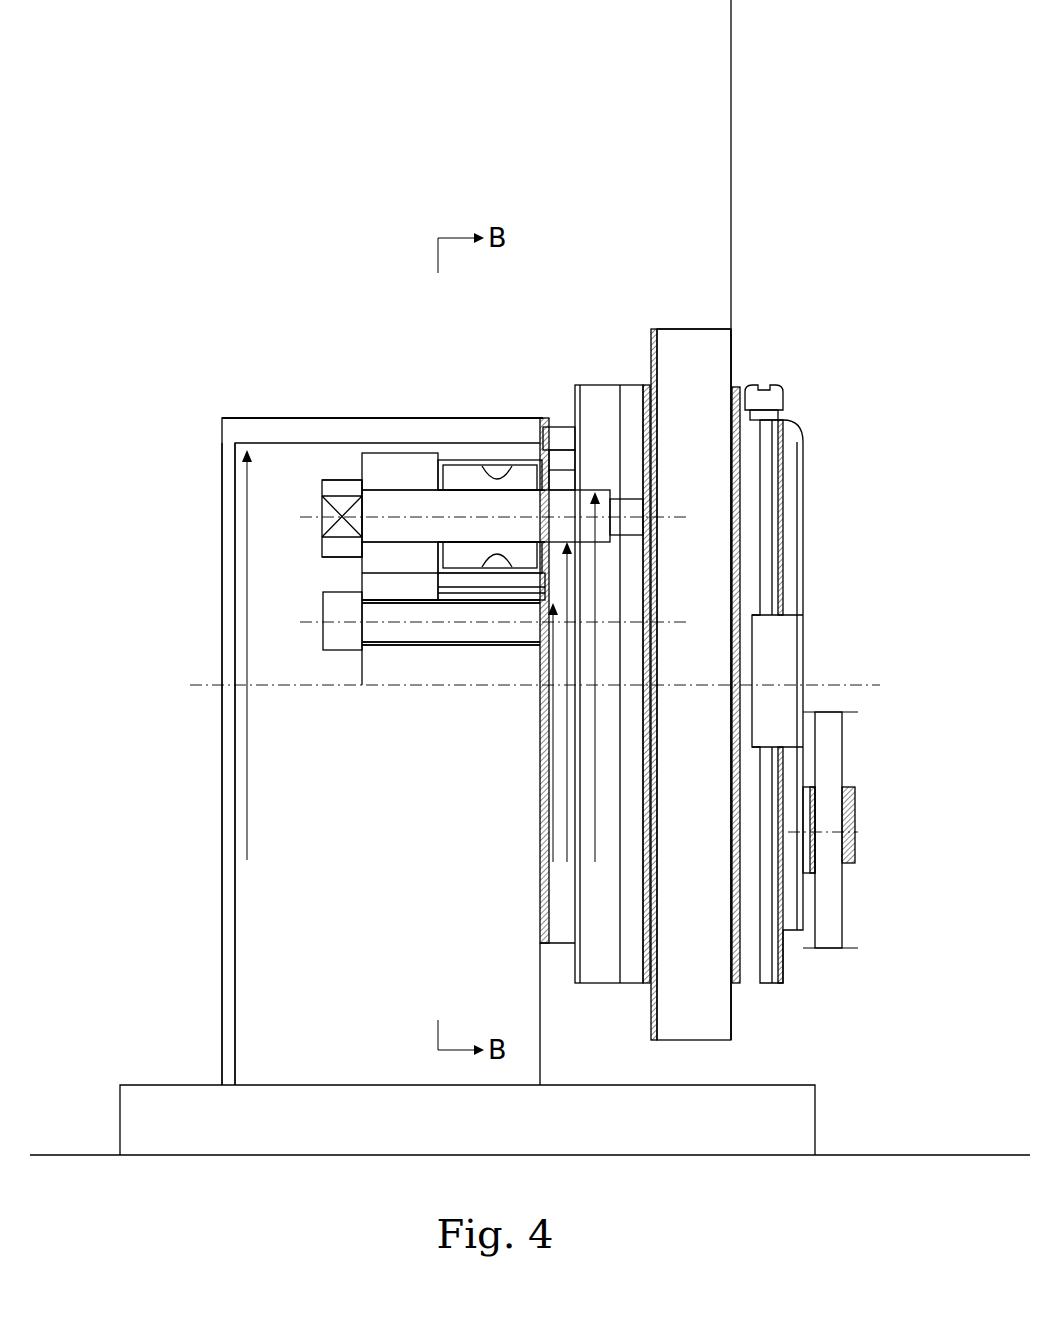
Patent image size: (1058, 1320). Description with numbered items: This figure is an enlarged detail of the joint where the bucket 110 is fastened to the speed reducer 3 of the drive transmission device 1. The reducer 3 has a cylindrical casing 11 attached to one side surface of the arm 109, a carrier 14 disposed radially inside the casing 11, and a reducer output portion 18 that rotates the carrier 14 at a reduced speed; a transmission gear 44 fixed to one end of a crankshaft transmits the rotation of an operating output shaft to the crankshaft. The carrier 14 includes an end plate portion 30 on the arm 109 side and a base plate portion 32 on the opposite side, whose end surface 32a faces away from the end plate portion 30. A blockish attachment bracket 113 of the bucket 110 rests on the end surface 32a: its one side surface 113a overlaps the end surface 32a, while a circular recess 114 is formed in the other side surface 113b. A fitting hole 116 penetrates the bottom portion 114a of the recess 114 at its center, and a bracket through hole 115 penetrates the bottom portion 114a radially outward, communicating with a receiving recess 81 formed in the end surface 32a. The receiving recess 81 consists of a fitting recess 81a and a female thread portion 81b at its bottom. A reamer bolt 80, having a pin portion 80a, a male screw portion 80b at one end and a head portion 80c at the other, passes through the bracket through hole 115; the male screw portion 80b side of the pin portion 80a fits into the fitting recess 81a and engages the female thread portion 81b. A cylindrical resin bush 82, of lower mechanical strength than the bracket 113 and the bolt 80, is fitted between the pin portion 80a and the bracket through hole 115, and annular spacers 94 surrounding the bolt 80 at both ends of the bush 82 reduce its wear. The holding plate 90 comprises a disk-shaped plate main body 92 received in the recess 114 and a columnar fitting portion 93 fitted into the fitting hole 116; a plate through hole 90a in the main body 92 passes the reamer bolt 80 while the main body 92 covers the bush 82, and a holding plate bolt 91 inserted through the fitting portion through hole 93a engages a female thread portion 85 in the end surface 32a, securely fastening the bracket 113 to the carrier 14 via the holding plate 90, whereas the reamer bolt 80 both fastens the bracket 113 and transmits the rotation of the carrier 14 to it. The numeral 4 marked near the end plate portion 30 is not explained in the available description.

The drive transmission device 1 is at (680, 245).
The speed reducer 3 is at (740, 323).
The rotary unit 4 is at (821, 684).
The cylindrical casing 11 is at (701, 318).
The carrier 14 is at (530, 864).
The reducer output portion 18 is at (860, 862).
The end plate portion 30 is at (805, 510).
The base plate portion 32 is at (598, 385).
The end surface of the base plate portion 32a is at (548, 428).
The transmission gear 44 is at (835, 755).
The reamer bolt 80 is at (386, 478).
The pin portion 80a is at (452, 492).
The male screw portion 80b is at (630, 540).
The head portion 80c is at (340, 478).
The receiving recess 81 is at (645, 634).
The fitting recess 81a is at (646, 500).
The female thread portion for the reamer bolt 81b is at (654, 530).
The resin bush 82 is at (468, 604).
The female thread portion for the bolt 85 is at (532, 633).
The holding plate 90 is at (449, 476).
The plate through hole 90a is at (400, 527).
The holding plate bolt 91 is at (405, 645).
The plate main body 92 is at (398, 453).
The fitting portion 93 is at (482, 573).
The fitting portion through hole 93a is at (385, 643).
The annular spacer 94 is at (488, 470).
The arm 109 is at (728, 75).
The bucket 110 is at (228, 406).
The attachment bracket 113 is at (332, 418).
The one side surface of the attachment bracket 113a is at (545, 1015).
The other side surface of the attachment bracket 113b is at (222, 432).
The recess 114 is at (227, 468).
The bottom portion of the recess 114a is at (435, 585).
The bracket through hole 115 is at (548, 465).
The fitting hole 116 is at (497, 604).